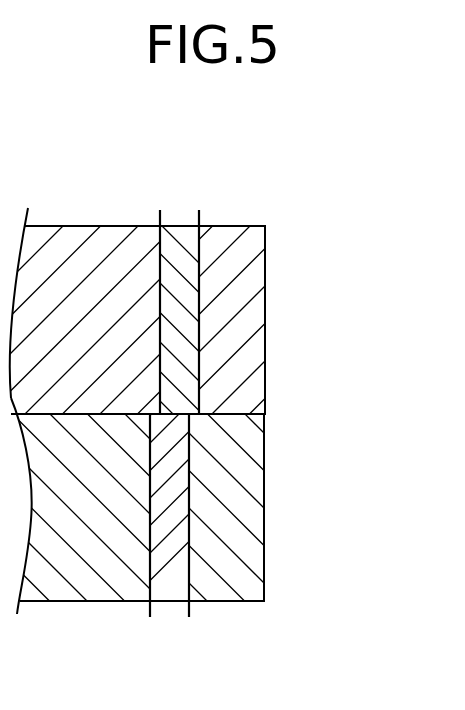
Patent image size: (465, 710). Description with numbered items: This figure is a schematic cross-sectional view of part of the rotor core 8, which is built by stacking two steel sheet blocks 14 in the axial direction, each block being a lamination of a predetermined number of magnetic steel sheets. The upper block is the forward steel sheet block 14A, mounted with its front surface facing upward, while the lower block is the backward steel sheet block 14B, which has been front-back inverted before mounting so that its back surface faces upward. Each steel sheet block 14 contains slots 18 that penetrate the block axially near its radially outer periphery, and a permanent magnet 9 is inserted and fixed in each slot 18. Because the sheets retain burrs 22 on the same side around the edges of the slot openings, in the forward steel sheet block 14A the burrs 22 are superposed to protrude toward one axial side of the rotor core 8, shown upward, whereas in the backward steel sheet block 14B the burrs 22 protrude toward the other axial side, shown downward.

The rotor core 8 is at (310, 190).
The steel sheet block 14 is at (209, 411).
The forward steel sheet block 14A is at (244, 329).
The backward steel sheet block 14B is at (245, 468).
The permanent magnet 9 is at (183, 391).
The slot 18 is at (203, 252).
The burr 22 is at (201, 216).